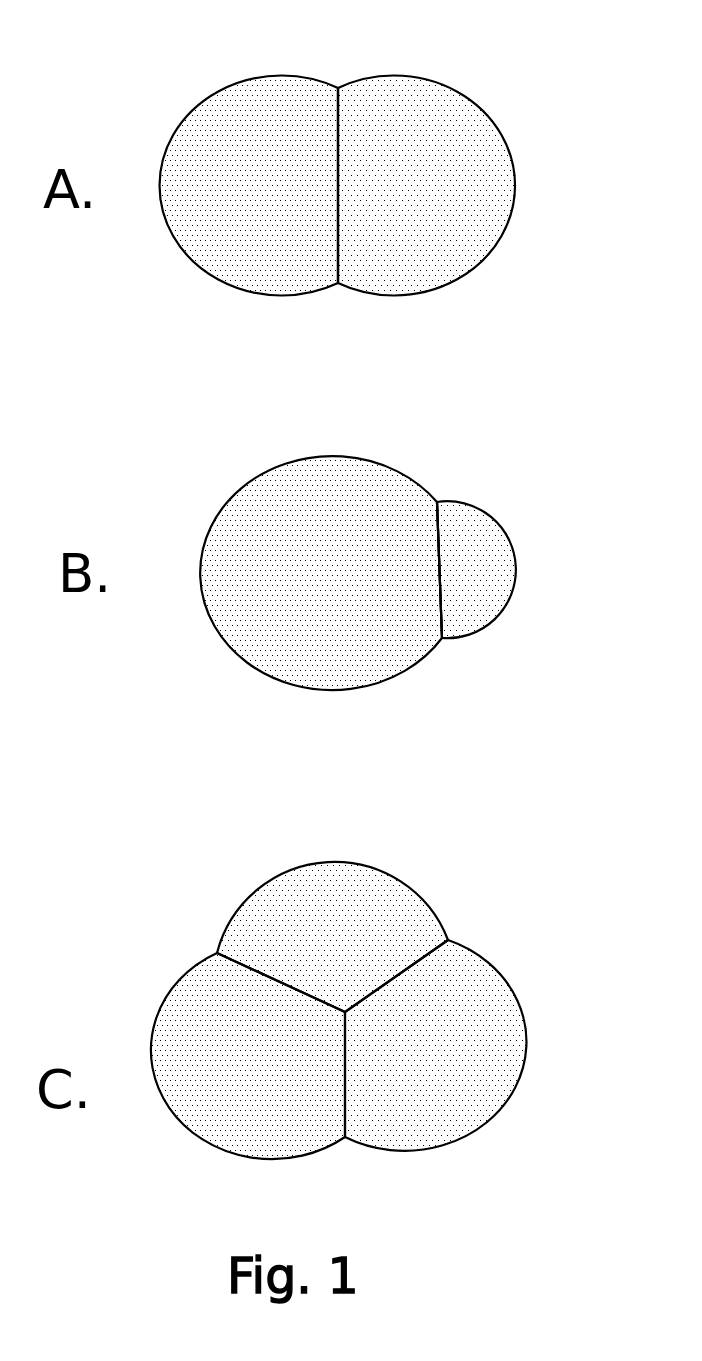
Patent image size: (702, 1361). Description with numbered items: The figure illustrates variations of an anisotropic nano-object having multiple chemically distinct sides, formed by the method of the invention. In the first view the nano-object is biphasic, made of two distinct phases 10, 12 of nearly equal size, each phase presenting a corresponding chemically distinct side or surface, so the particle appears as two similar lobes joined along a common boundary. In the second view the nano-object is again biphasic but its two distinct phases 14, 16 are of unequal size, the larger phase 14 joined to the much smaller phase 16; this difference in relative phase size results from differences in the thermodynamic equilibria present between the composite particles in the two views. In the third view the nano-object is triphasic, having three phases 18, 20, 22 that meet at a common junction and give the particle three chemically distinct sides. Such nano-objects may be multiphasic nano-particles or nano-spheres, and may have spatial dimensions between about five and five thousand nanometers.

In FIG. 1A, the distinct phase 10 is at (243, 143).
In FIG. 1A, the distinct phase 12 is at (400, 172).
In FIG. 1B, the distinct phase 14 is at (307, 550).
In FIG. 1B, the distinct phase 16 is at (481, 548).
In FIG. 1C, the phase 18 is at (313, 938).
In FIG. 1C, the phase 20 is at (255, 1050).
In FIG. 1C, the phase 22 is at (458, 1037).